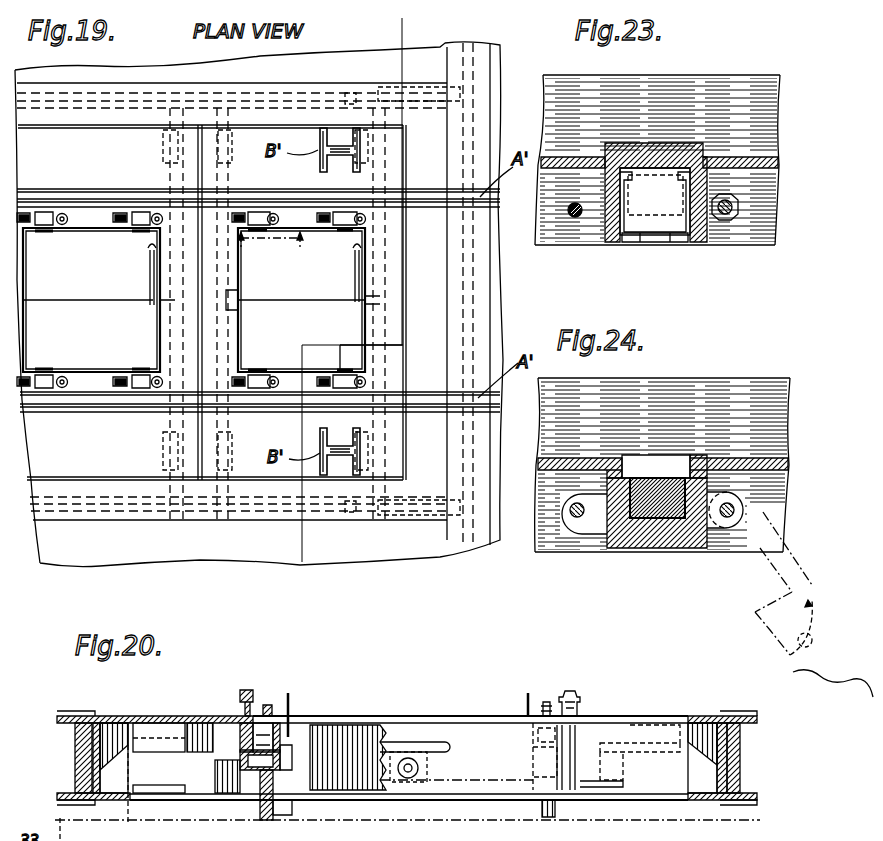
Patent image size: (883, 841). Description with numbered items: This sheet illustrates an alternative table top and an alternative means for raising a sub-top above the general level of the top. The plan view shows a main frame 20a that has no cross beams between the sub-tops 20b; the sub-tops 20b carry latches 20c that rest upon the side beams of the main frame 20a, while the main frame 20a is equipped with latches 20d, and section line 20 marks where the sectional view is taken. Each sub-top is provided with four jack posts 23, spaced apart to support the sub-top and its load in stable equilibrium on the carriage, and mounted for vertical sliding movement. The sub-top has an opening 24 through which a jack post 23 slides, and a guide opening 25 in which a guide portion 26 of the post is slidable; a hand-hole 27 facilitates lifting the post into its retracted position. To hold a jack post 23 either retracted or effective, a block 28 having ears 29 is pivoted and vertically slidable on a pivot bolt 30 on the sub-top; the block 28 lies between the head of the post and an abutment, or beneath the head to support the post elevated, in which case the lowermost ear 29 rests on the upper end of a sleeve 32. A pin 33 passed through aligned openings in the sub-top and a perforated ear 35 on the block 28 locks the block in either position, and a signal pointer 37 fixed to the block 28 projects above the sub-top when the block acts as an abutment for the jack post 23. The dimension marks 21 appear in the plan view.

In FIG. 19, the section line 20— 20 is at (385, 32).
In FIG. 19, the main frame 20a is at (433, 160).
In FIG. 20, the main frame 20a is at (73, 716).
In FIG. 19, the sub-tops 20b is at (393, 287).
In FIG. 23, the sub-tops 20b is at (777, 75).
In FIG. 20, the sub-tops 20b is at (445, 715).
In FIG. 19, the latches 20c is at (222, 113).
In FIG. 20, the latches 20c is at (120, 780).
In FIG. 19, the latches 20d is at (458, 93).
In FIG. 19, the spacing indicator 21 is at (274, 248).
In FIG. 23, the jack posts 23 is at (693, 227).
In FIG. 24, the jack posts 23 is at (652, 487).
In FIG. 20, the jack posts 23 is at (280, 812).
In FIG. 20, the opening 24 is at (258, 802).
In FIG. 23, the guide opening 25 is at (715, 157).
In FIG. 24, the guide opening 25 is at (670, 467).
In FIG. 20, the guide opening 25 is at (227, 735).
In FIG. 23, the guide portion 26 is at (635, 157).
In FIG. 20, the guide portion 26 is at (240, 758).
In FIG. 23, the hand-hole 27 is at (673, 236).
In FIG. 24, the block 28 is at (675, 537).
In FIG. 20, the block 28 is at (280, 742).
In FIG. 24, the ears 29 is at (737, 506).
In FIG. 23, the pivot bolt 30 is at (733, 213).
In FIG. 24, the pivot bolt 30 is at (727, 518).
In FIG. 23, the sleeve 32 is at (735, 198).
In FIG. 23, the pin 33 is at (573, 217).
In FIG. 24, the pin 33 is at (576, 518).
In FIG. 24, the perforated ear 35 is at (595, 522).
In FIG. 20, the signal pointer 37 is at (290, 710).